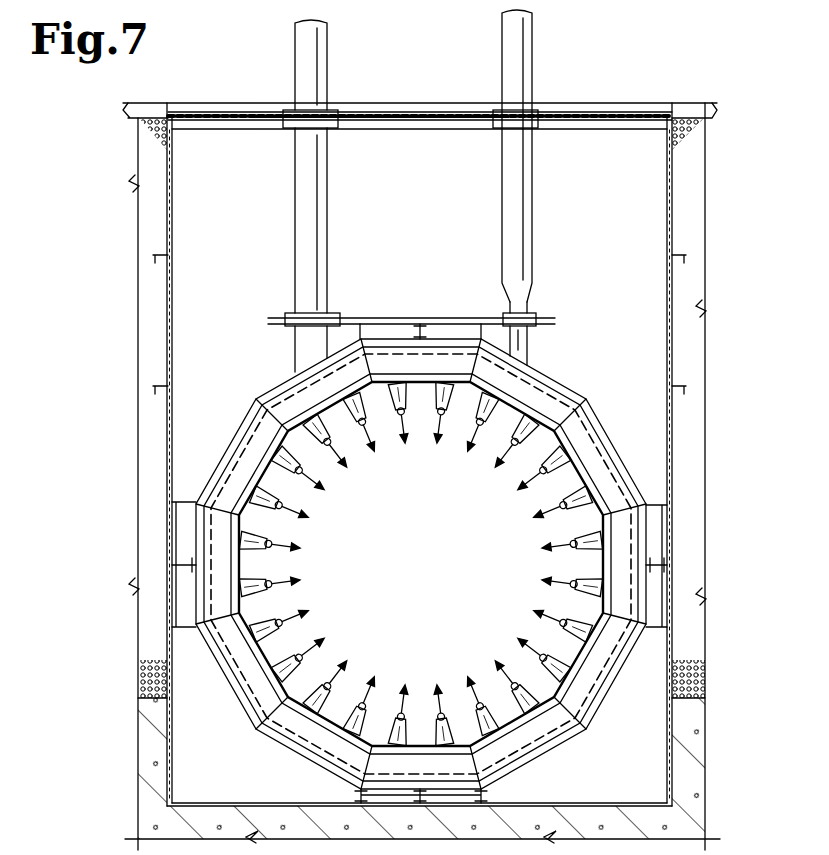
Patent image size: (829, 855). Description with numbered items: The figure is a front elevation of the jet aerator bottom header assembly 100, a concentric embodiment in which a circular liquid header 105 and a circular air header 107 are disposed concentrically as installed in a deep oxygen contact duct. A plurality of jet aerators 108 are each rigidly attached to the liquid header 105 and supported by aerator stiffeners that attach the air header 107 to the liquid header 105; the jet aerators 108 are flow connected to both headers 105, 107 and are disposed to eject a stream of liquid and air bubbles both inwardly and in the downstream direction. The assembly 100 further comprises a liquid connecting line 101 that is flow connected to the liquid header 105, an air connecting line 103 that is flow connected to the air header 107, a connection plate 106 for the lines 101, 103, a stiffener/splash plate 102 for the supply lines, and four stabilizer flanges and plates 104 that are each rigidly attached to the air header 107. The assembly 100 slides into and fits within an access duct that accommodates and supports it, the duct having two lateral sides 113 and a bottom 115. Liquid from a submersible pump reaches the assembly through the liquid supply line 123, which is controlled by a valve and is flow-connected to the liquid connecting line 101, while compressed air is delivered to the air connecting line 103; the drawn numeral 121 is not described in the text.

The jet aerator bottom header assembly 100 is at (472, 551).
The liquid connecting line 101 is at (296, 349).
The stiffener/splash plate 102 is at (440, 112).
The air connecting line 103 is at (526, 340).
The stabilizer flanges and plates 104 is at (402, 326).
The liquid header 105 is at (590, 468).
The connection plate 106 is at (268, 318).
The air header 107 is at (600, 425).
The jet aerators 108 is at (272, 637).
The lateral sides 113 is at (172, 198).
The bottom 115 is at (620, 803).
The inlet pipe 121 is at (296, 48).
The liquid supply line 123 is at (532, 48).